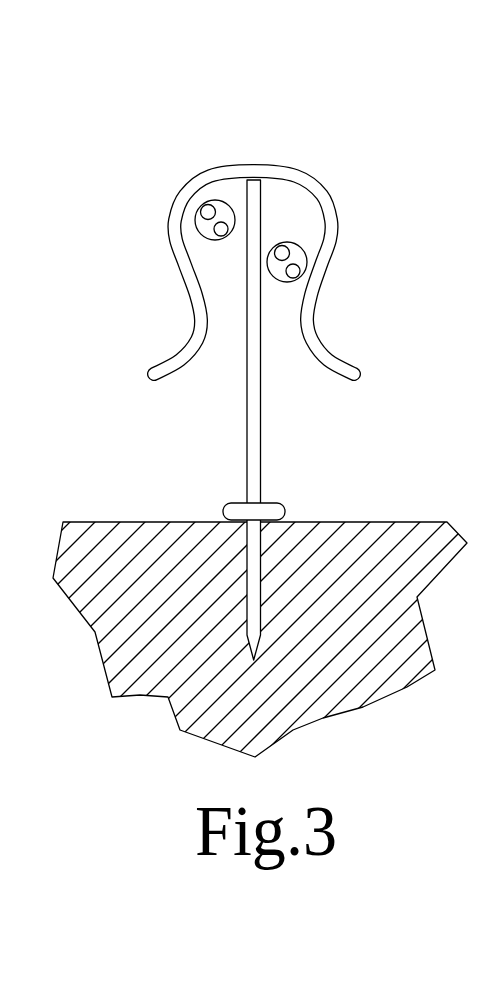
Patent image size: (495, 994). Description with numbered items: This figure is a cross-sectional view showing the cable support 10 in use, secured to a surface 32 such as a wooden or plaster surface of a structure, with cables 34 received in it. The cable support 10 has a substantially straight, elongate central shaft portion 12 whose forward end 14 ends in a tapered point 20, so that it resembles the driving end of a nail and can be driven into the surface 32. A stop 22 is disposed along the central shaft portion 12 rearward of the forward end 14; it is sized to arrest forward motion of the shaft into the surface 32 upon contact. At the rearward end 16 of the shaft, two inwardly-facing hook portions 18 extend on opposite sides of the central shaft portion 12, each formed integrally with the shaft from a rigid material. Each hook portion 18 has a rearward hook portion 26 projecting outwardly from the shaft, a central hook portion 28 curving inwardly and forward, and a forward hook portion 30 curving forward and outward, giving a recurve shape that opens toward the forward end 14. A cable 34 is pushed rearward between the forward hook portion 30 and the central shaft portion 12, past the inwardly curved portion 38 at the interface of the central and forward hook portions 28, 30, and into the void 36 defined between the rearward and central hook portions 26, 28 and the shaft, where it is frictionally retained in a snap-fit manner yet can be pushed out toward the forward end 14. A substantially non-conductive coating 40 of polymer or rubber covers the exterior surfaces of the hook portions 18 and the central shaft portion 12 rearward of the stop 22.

The cable support 10 is at (247, 414).
The central shaft portion 12 is at (275, 463).
The forward end 14 is at (270, 588).
The rearward end 16 is at (280, 213).
The hook portion 18 is at (183, 185).
The tapered point 20 is at (248, 652).
The stop 22 is at (230, 510).
The rearward hook portion 26 is at (213, 167).
The central hook portion 28 is at (178, 263).
The forward hook portion 30 is at (163, 358).
The surface 32 is at (433, 521).
The cable 34 is at (193, 222).
The void 36 is at (232, 195).
The inwardly curved portion 38 is at (193, 323).
The coating 40 is at (262, 395).